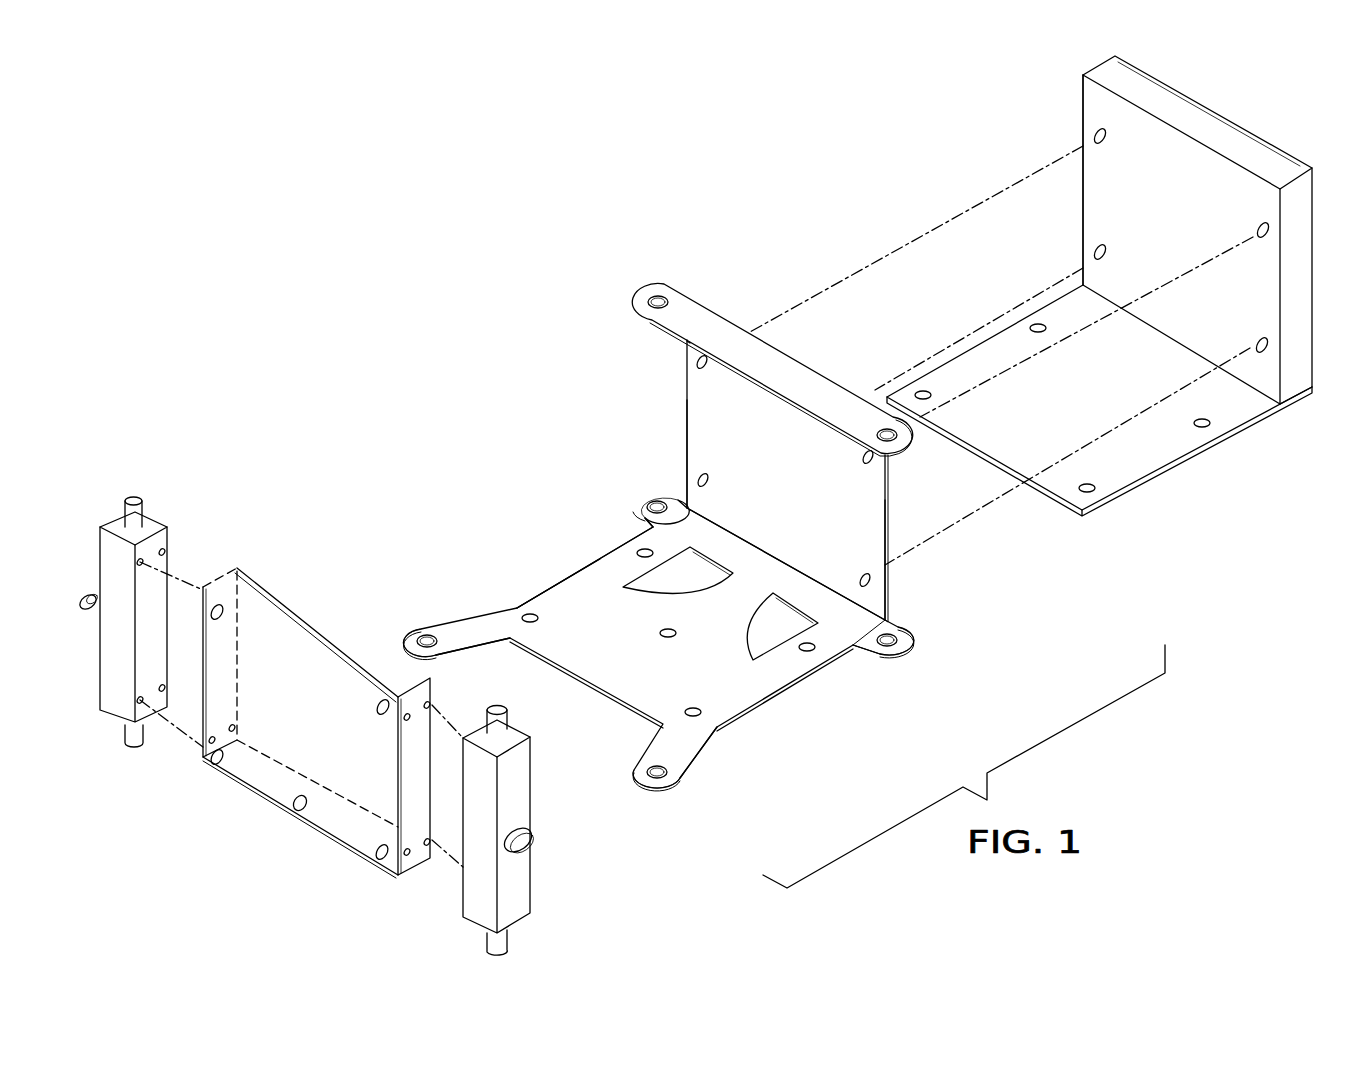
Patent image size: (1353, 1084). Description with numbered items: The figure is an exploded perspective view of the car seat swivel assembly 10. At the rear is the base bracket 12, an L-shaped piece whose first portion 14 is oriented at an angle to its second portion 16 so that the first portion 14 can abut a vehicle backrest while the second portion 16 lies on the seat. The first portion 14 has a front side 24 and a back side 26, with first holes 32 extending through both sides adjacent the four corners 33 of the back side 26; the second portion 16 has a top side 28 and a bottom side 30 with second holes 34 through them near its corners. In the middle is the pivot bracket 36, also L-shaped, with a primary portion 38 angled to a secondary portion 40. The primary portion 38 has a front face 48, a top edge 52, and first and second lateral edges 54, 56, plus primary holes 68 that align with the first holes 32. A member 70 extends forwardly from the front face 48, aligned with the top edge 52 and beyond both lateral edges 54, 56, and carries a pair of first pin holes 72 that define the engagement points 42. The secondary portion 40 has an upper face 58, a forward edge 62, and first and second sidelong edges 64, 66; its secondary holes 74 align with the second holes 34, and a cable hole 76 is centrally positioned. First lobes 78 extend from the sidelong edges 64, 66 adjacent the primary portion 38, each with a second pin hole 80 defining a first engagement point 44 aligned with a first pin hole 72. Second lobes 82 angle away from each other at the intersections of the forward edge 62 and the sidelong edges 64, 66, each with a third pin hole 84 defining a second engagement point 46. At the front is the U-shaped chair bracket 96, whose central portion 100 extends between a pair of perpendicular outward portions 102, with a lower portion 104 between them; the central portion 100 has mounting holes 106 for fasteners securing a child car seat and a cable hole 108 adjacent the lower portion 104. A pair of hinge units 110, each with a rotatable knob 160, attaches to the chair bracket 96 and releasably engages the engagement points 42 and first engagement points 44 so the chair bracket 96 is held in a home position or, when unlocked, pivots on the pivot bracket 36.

The car seat swivel assembly 10 is at (505, 145).
The base bracket 12 is at (1130, 50).
The first portion 14 is at (1083, 75).
The second portion 16 is at (1243, 424).
The front side 24 is at (1098, 105).
The back side 26 is at (1247, 130).
The top side 28 is at (987, 377).
The bottom side 30 is at (1122, 405).
The first holes 32 is at (1093, 142).
The corners 33 is at (1083, 77).
The second holes 34 is at (922, 388).
The pivot bracket 36 is at (612, 305).
The primary portion 38 is at (683, 372).
The secondary portion 40 is at (563, 582).
The engagement points 42 is at (650, 286).
The first engagement points 44 is at (636, 478).
The second engagement points 46 is at (430, 610).
The front face 48 is at (725, 410).
The top edge 52 is at (815, 400).
The first lateral edge 54 is at (688, 455).
The second lateral edge 56 is at (888, 527).
The upper face 58 is at (573, 613).
The forward edge 62 is at (558, 667).
The first sidelong edge 64 is at (533, 596).
The second sidelong edge 66 is at (770, 710).
The primary holes 68 is at (700, 354).
The member 70 is at (773, 375).
The first pin holes 72 is at (649, 299).
The secondary holes 74 is at (639, 549).
The cable hole 76 is at (661, 640).
The first lobes 78 is at (646, 504).
The second pin hole 80 is at (634, 516).
The second lobes 82 is at (414, 626).
The third pin hole 84 is at (423, 632).
The chair bracket 96 is at (240, 557).
The central portion 100 is at (300, 743).
The outward portions 102 is at (222, 565).
The lower portion 104 is at (270, 745).
The mounting holes 106 is at (90, 594).
The cable hole 108 is at (299, 812).
The hinge units 110 is at (106, 507).
The knob 160 is at (532, 845).